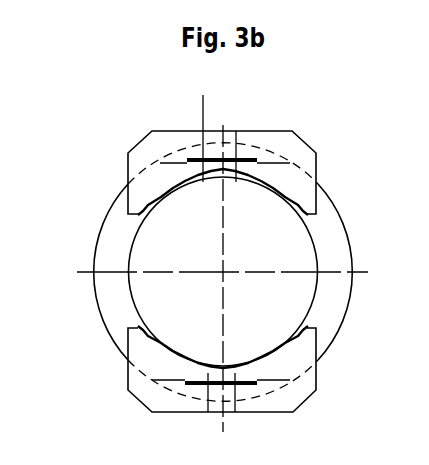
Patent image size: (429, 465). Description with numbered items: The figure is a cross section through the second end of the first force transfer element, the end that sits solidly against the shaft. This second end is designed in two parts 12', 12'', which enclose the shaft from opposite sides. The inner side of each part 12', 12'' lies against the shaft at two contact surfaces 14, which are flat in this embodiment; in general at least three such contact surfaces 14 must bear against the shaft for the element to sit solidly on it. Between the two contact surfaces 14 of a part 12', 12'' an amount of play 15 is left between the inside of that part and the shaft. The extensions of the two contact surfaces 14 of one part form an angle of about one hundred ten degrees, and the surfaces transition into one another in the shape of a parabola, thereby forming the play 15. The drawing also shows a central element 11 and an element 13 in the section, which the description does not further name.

The ball 11 is at (320, 306).
The part of the second end 12' is at (264, 172).
The part of the second end 12'' is at (260, 370).
The pin 13 is at (207, 126).
The contact surfaces 14 is at (278, 198).
The play 15 is at (207, 172).